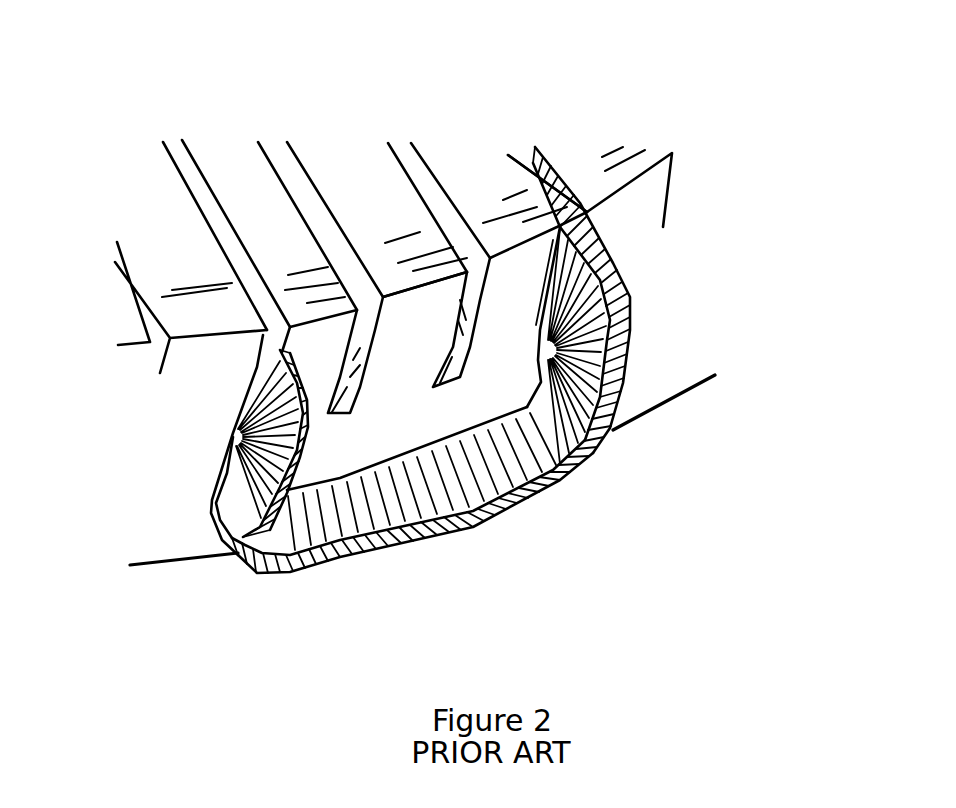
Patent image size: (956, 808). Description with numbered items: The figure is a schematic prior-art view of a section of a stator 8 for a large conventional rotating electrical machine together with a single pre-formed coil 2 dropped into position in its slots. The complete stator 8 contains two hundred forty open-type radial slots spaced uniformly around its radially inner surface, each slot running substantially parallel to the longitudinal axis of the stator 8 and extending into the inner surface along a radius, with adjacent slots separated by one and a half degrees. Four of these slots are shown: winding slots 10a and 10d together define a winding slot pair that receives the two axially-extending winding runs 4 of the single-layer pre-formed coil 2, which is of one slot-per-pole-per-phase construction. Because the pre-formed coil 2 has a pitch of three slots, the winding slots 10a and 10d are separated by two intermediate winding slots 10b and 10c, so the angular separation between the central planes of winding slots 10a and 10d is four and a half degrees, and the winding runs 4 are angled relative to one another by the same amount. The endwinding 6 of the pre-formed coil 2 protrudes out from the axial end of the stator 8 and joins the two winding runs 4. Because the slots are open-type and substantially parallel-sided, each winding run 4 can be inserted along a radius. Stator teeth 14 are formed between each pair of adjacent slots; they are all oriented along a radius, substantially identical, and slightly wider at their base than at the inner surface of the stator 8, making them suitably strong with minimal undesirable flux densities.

The pre-formed coil 2 is at (415, 412).
The axially-extending winding runs 4 is at (277, 378).
The endwinding 6 is at (423, 493).
The stator 8 is at (658, 423).
The winding slot 10a is at (188, 170).
The intermediate winding slot 10b is at (292, 183).
The intermediate winding slot 10c is at (420, 170).
The winding slot 10d is at (560, 182).
The stator teeth 14 is at (505, 182).